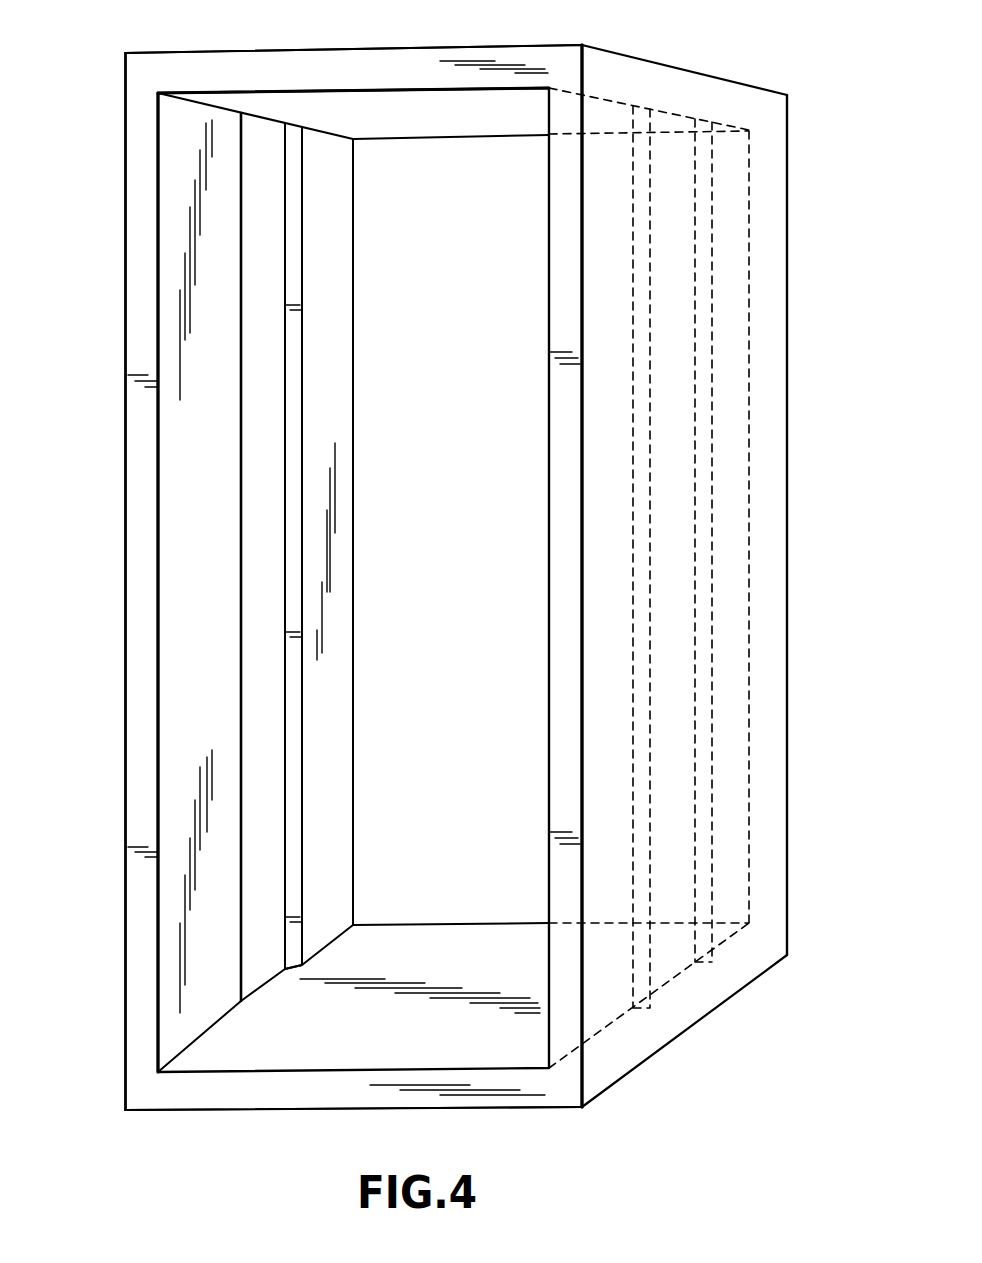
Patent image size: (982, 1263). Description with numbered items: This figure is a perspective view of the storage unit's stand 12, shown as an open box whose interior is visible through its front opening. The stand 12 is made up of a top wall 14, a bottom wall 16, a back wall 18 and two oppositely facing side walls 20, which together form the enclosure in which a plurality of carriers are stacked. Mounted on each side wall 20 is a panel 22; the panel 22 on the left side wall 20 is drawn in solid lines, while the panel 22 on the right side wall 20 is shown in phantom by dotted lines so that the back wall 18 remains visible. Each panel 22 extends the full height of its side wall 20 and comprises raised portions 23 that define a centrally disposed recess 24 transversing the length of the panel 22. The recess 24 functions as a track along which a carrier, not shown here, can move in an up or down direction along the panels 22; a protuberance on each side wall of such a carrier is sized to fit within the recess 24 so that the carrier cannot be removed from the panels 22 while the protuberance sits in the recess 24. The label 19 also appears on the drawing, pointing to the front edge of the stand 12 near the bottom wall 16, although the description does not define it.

The stand 12 is at (797, 482).
The top wall 14 is at (436, 50).
The bottom wall 16 is at (320, 1100).
The back wall 18 is at (452, 644).
The front opening frame 19 is at (146, 1003).
The side wall 20 is at (136, 238).
The panel 22 is at (208, 708).
The raised portions 23 is at (180, 478).
The recess 24 is at (282, 569).